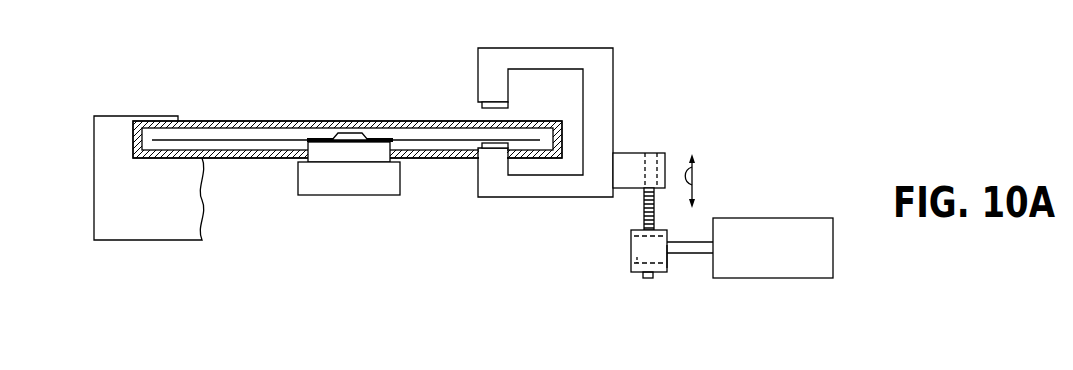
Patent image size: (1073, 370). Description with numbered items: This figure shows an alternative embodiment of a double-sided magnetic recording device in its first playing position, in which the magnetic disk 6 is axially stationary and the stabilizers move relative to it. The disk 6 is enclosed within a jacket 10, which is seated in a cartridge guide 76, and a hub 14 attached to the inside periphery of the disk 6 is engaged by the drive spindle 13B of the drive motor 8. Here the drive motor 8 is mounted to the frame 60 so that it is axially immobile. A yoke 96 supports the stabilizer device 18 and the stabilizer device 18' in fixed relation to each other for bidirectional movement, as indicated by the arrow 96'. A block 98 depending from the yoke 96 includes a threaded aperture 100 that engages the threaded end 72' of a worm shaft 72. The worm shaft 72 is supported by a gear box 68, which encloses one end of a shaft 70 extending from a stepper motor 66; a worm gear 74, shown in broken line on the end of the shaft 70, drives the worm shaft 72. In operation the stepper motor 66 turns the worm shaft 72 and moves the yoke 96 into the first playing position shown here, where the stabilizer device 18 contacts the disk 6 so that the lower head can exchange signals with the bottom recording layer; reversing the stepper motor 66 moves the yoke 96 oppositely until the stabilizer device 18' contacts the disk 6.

The jacket 10 is at (189, 131).
The cartridge guide 76 is at (227, 122).
The magnetic disk 6 is at (252, 143).
The hub 14 is at (318, 138).
The drive spindle 13B is at (352, 134).
The stabilizer device 18' is at (460, 92).
The stabilizer device 18 is at (465, 177).
The drive motor 8 is at (342, 180).
The frame 60 is at (195, 222).
The yoke 96 is at (588, 122).
The block 98 is at (665, 160).
The threaded aperture 100 is at (657, 153).
The arrow 96' is at (721, 181).
The threaded end 72' is at (618, 212).
The worm gear 74 is at (630, 252).
The worm shaft 72 is at (637, 304).
The gear box 68 is at (668, 262).
The shaft 70 is at (685, 250).
The stepper motor 66 is at (803, 227).